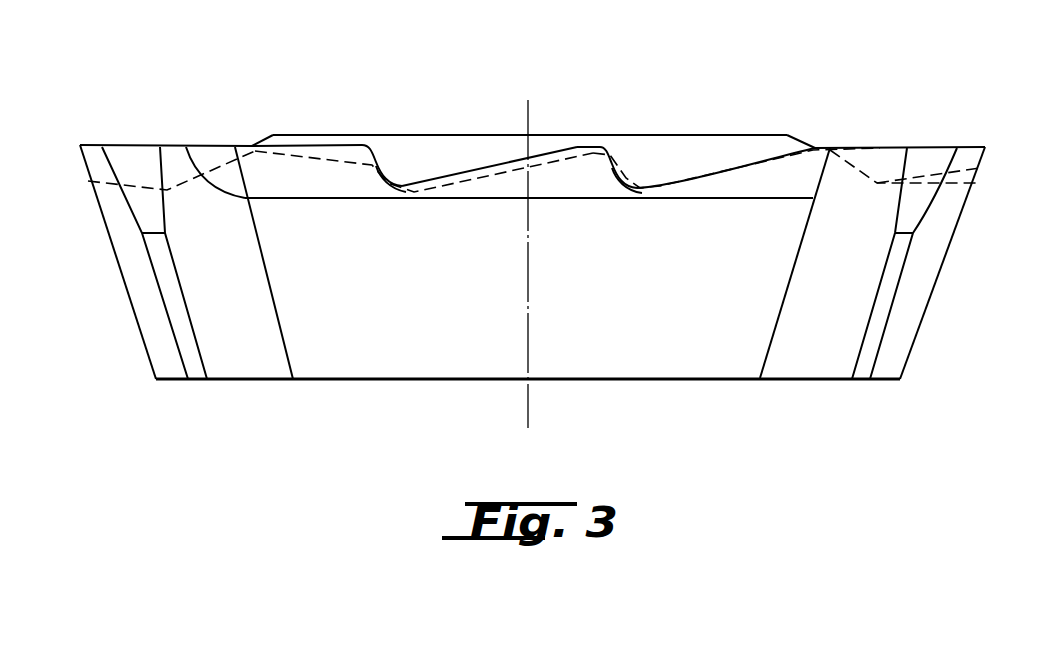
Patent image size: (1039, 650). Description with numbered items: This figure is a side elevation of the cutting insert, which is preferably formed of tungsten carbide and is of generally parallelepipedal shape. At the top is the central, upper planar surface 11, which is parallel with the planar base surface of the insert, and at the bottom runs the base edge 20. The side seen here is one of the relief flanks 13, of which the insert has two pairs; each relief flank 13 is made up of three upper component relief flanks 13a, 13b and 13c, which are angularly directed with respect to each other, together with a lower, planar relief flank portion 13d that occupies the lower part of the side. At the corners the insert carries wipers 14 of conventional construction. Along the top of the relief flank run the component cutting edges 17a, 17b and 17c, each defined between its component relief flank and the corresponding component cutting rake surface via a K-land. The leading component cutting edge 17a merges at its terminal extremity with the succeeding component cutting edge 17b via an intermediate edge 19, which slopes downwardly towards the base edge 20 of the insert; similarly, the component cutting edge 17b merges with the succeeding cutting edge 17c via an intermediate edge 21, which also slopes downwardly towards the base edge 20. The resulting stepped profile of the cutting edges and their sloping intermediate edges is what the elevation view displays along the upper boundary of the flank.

The central upper planar surface 11 is at (452, 135).
The relief flank 13 is at (477, 320).
The upper component relief flank 13a is at (285, 163).
The upper component relief flank 13b is at (562, 168).
The upper component relief flank 13c is at (760, 175).
The lower planar relief flank portion 13d is at (640, 325).
The wiper 14 is at (128, 163).
The leading component cutting edge 17a is at (323, 145).
The component cutting edge 17b is at (497, 165).
The component cutting edge 17c is at (700, 168).
The intermediate edge 19 is at (385, 168).
The base edge 20 is at (372, 380).
The intermediate edge 21 is at (628, 168).